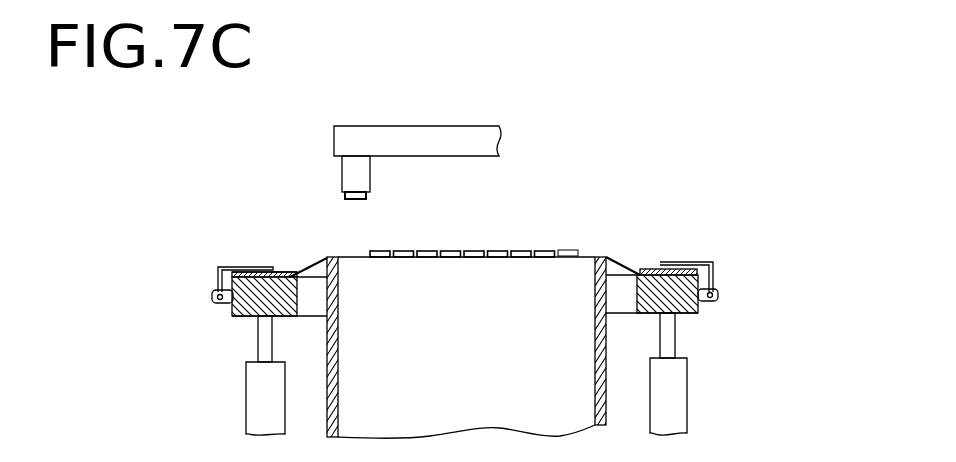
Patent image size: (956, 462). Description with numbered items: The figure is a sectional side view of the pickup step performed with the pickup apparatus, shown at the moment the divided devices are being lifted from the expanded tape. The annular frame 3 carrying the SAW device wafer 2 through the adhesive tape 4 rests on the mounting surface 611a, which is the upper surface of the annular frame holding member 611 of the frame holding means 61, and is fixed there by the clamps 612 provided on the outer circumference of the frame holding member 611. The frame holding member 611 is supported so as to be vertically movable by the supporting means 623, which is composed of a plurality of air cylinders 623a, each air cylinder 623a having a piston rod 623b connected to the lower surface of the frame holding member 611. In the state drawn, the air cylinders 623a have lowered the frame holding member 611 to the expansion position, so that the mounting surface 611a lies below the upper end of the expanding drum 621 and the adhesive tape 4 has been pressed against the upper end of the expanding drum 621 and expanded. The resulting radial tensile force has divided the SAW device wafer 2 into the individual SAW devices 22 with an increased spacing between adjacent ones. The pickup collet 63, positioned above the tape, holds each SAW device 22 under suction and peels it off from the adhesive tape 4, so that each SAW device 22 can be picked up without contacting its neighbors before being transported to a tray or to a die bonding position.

The SAW device wafer 2 is at (520, 251).
The SAW device 22 is at (345, 196).
The annular frame 3 is at (280, 271).
The adhesive tape 4 is at (612, 258).
The frame holding means 61 is at (480, 319).
The annular frame holding member 611 is at (239, 320).
The mounting surface 611a is at (258, 270).
The clamp 612 is at (218, 268).
The expanding drum 621 is at (340, 361).
The supporting means 623 is at (470, 379).
The air cylinder 623a is at (694, 378).
The piston rod 623b is at (670, 338).
The pickup collet 63 is at (413, 117).